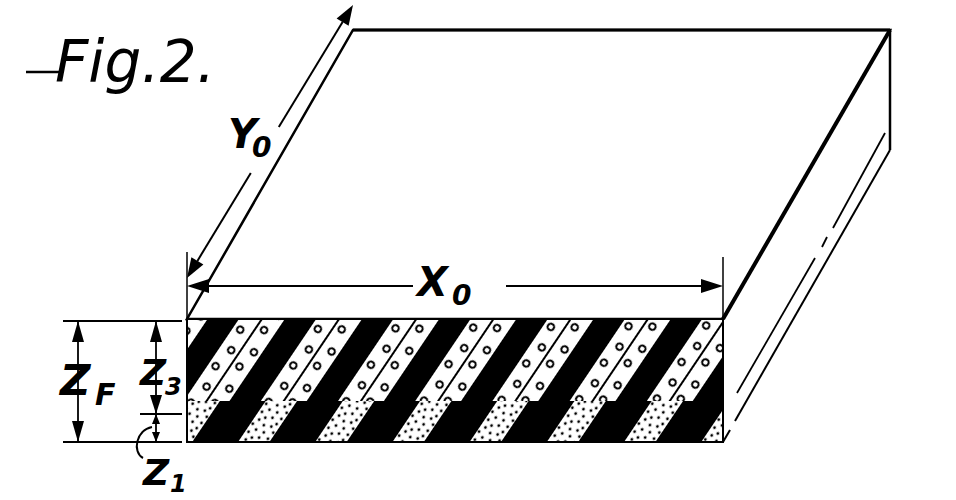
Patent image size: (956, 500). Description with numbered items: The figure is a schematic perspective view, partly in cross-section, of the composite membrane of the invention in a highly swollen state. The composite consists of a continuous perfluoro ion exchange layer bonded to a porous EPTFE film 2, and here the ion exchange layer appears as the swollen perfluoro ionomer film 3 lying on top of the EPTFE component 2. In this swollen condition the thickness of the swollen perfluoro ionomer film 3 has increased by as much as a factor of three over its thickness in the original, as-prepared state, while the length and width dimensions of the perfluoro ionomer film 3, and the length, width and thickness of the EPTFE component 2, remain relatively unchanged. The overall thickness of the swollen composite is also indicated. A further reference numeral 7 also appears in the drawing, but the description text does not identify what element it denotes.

The porous EPTFE film 2 is at (733, 412).
The swollen perfluoro ionomer film 3 is at (745, 340).
The top surface layer 7 is at (190, 316).